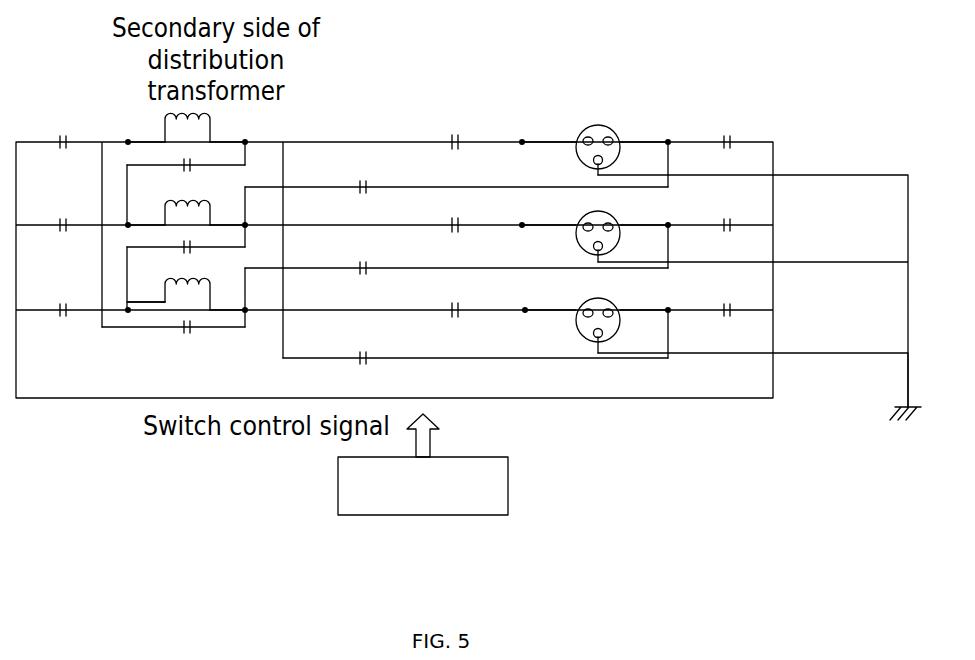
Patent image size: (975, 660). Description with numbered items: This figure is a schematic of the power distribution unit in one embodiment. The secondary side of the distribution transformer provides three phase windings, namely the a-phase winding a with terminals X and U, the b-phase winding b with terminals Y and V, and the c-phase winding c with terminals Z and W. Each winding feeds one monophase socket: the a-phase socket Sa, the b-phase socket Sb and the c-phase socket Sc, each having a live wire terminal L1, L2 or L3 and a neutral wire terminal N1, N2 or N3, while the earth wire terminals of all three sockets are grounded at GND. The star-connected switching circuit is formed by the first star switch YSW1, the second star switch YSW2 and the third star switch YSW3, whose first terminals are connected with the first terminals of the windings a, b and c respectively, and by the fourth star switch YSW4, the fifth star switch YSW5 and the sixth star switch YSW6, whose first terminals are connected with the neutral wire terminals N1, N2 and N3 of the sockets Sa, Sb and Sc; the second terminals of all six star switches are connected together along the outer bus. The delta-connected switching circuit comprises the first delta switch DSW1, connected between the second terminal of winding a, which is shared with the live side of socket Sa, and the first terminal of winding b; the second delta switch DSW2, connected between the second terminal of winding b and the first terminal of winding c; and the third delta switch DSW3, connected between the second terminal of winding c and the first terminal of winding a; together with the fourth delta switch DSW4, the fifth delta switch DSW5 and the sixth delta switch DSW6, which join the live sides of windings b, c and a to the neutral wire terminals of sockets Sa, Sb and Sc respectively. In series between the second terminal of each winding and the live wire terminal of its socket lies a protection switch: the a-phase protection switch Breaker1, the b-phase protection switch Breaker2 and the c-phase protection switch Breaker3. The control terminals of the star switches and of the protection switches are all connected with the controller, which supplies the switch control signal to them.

The first star switch YSW1 is at (63, 134).
The second star switch YSW2 is at (63, 217).
The third star switch YSW3 is at (63, 302).
The fourth star switch YSW4 is at (727, 134).
The fifth star switch YSW5 is at (727, 217).
The sixth star switch YSW6 is at (727, 302).
The first delta switch DSW1 is at (186, 159).
The second delta switch DSW2 is at (186, 242).
The third delta switch DSW3 is at (173, 321).
The fourth delta switch DSW4 is at (456, 177).
The fifth delta switch DSW5 is at (456, 258).
The sixth delta switch DSW6 is at (475, 348).
The a-phase winding a is at (187, 127).
The b-phase winding b is at (187, 212).
The c-phase winding c is at (187, 294).
The winding a terminal X is at (146, 132).
The winding a terminal U is at (227, 132).
The winding b terminal Y is at (146, 216).
The winding b terminal V is at (227, 216).
The winding c terminal Z is at (146, 290).
The winding c terminal W is at (227, 294).
The a-phase protection switch Breaker1 is at (460, 131).
The b-phase protection switch Breaker2 is at (460, 215).
The c-phase protection switch Breaker3 is at (460, 300).
The a-phase socket Sa is at (598, 143).
The b-phase socket Sb is at (598, 230).
The c-phase socket Sc is at (598, 318).
The line terminal L1 is at (549, 136).
The neutral terminal N1 is at (644, 136).
The line terminal L2 is at (549, 219).
The neutral terminal N2 is at (644, 219).
The line terminal L3 is at (550, 304).
The neutral terminal N3 is at (644, 304).
The ground GND is at (896, 289).
The element controller is at (423, 486).